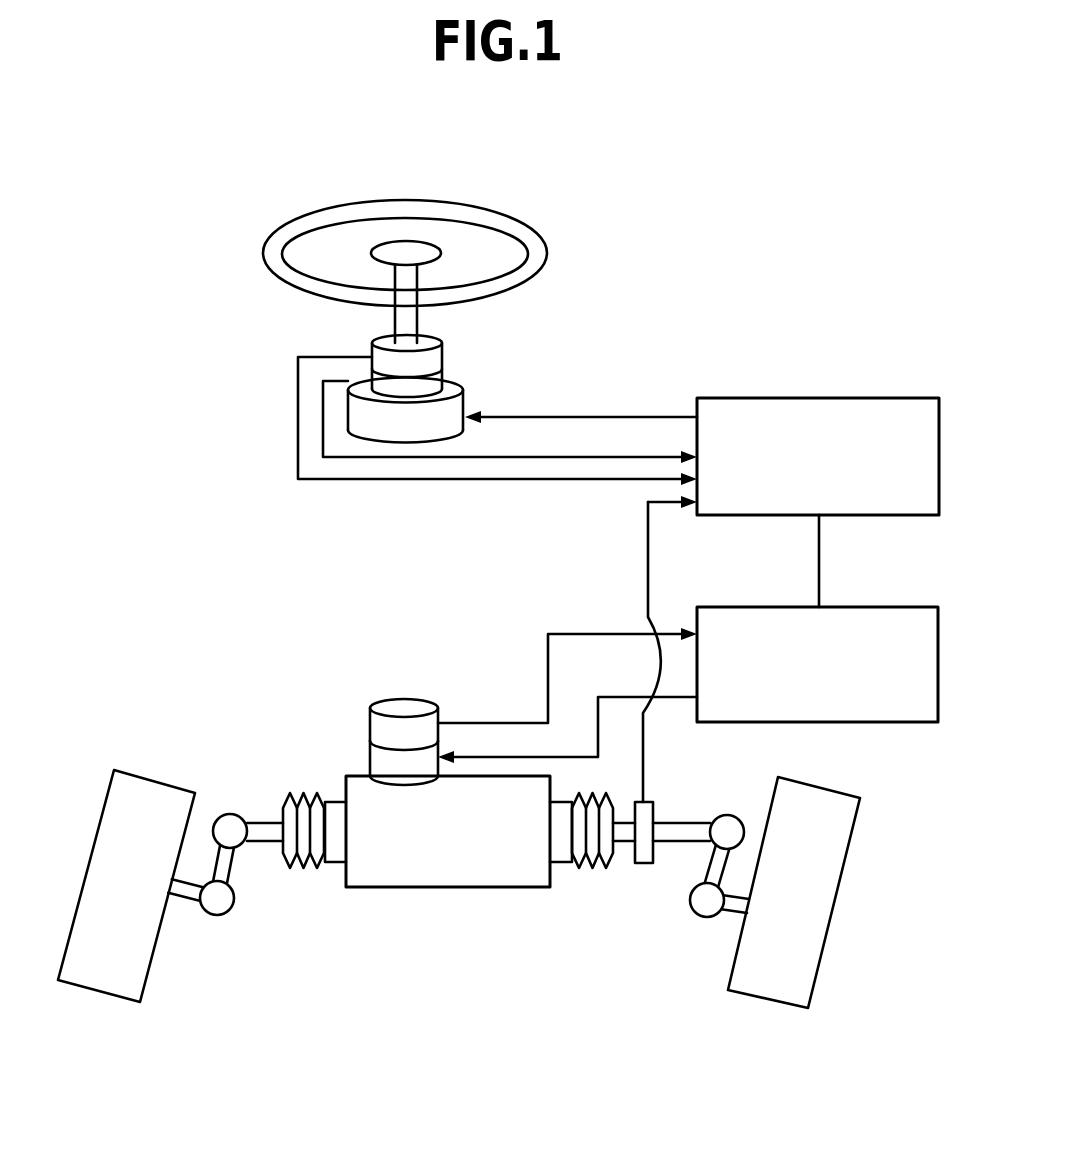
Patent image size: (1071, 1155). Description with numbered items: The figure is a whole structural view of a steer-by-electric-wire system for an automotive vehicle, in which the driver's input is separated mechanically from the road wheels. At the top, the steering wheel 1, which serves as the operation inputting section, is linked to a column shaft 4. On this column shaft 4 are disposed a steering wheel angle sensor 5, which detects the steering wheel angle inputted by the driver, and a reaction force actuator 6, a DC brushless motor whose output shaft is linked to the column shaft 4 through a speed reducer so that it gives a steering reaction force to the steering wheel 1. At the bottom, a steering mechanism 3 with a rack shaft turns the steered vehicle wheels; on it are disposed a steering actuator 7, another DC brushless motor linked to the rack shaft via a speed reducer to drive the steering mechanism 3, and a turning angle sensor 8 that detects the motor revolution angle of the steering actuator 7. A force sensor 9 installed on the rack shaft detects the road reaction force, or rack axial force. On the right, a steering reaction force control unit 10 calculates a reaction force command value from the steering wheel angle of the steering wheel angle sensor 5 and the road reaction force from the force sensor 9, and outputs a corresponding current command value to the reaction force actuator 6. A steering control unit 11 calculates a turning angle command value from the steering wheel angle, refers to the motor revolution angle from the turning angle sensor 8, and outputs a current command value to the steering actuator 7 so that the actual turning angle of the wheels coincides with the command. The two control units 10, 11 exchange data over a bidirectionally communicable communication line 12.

The steering wheel 1 is at (522, 220).
The steering mechanism 3 is at (462, 887).
The column shaft 4 is at (393, 317).
The steering wheel angle sensor 5 is at (430, 365).
The reaction force actuator 6 is at (443, 425).
The steering actuator 7 is at (383, 765).
The turning angle sensor 8 is at (380, 733).
The force sensor 9 is at (643, 865).
The steering reaction force control unit 10 is at (850, 398).
The steering control unit 11 is at (897, 723).
The communication line 12 is at (819, 567).